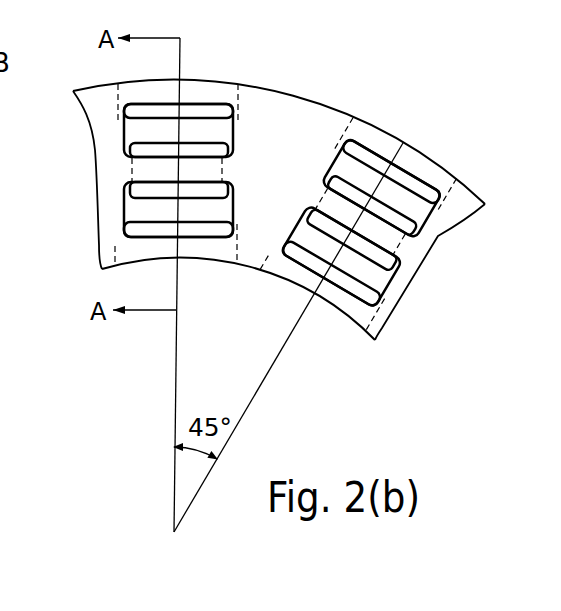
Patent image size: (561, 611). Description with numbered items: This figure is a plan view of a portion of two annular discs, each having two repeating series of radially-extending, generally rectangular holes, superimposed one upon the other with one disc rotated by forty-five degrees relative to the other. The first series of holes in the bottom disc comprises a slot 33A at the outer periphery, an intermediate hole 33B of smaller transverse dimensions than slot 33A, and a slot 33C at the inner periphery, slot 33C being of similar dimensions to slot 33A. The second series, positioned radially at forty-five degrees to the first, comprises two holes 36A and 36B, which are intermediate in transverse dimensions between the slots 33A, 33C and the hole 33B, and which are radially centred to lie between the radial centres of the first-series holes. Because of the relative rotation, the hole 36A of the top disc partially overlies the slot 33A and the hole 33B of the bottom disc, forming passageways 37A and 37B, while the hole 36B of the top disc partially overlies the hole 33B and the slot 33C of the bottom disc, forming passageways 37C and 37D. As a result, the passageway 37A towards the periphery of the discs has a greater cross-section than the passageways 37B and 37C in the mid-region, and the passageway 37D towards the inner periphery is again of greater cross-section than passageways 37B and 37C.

The slot 33A is at (200, 95).
The intermediate hole 33B is at (217, 173).
The slot 33C is at (189, 247).
The hole 36A is at (222, 135).
The hole 36B is at (218, 212).
The passageway 37A is at (217, 113).
The passageway 37B is at (138, 152).
The passageway 37C is at (140, 193).
The passageway 37D is at (140, 235).